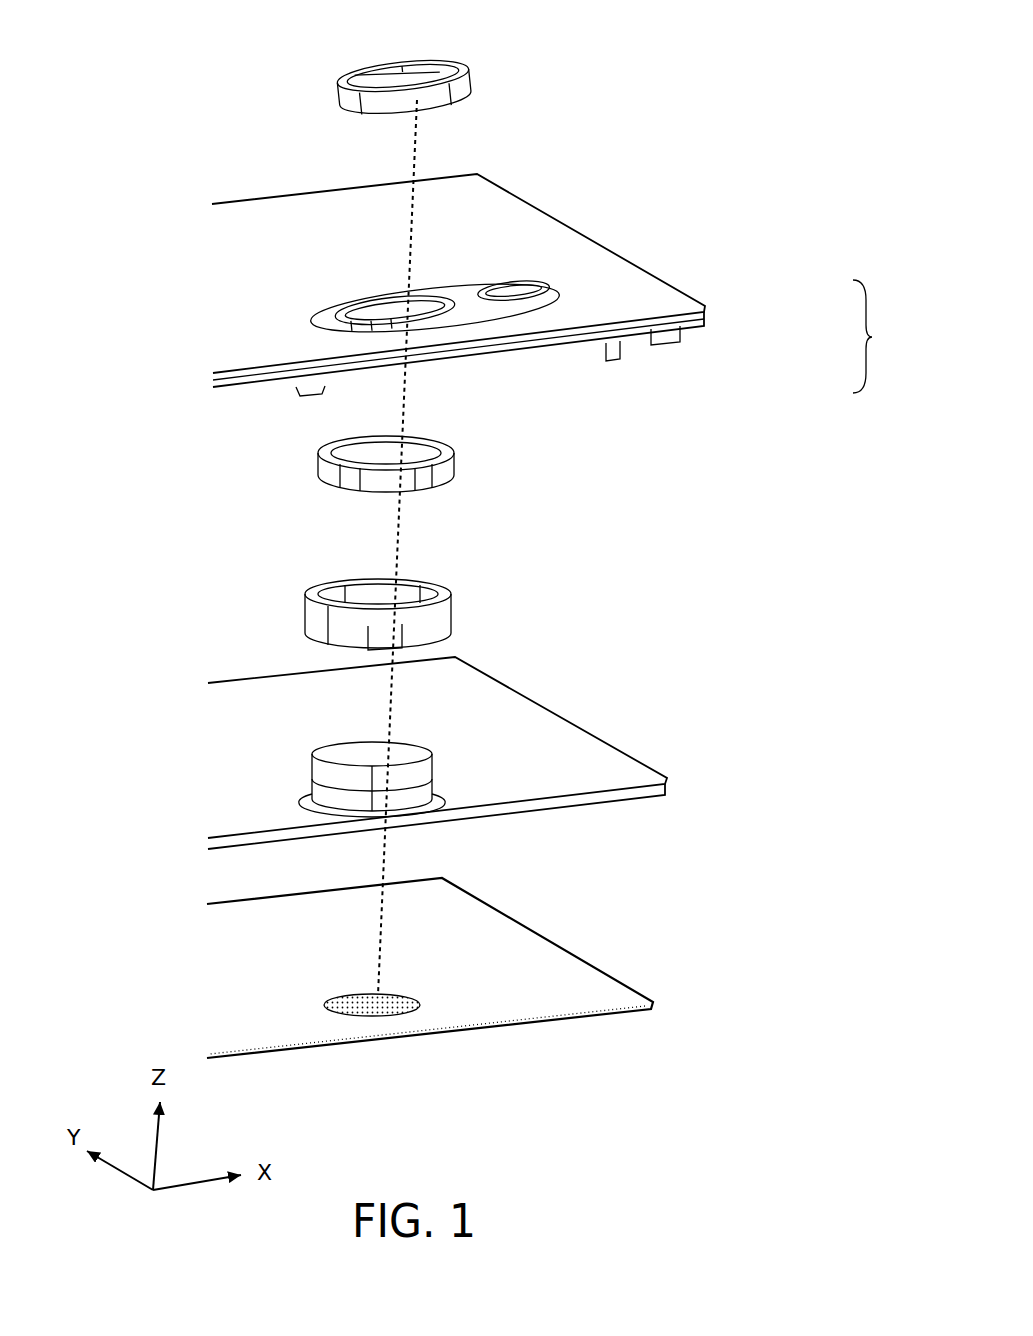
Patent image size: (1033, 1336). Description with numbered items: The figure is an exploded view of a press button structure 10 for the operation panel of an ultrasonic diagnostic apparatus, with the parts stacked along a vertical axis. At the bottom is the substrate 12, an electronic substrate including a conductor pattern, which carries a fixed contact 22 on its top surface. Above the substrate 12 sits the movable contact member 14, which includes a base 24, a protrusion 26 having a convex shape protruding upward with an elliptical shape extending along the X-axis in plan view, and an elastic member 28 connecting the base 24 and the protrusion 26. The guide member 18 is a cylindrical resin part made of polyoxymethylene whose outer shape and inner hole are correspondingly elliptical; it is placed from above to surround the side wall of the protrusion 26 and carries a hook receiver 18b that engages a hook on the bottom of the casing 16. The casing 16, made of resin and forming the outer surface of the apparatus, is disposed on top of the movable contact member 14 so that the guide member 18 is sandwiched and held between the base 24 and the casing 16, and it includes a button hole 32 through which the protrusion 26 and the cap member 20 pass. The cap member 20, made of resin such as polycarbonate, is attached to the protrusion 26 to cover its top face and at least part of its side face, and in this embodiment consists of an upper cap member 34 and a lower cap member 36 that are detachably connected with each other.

The press button structure 10 is at (227, 90).
The substrate 12 is at (462, 968).
The movable contact member 14 is at (496, 747).
The casing 16 is at (570, 210).
The guide member 18 is at (358, 623).
The hook receiver 18b is at (387, 632).
The cap member 20 is at (881, 336).
The fixed contact 22 is at (303, 1000).
The base 24 is at (530, 735).
The protrusion 26 is at (290, 773).
The elastic member 28 is at (300, 800).
The button hole 32 is at (348, 287).
The upper cap member 34 is at (484, 78).
The lower cap member 36 is at (470, 462).